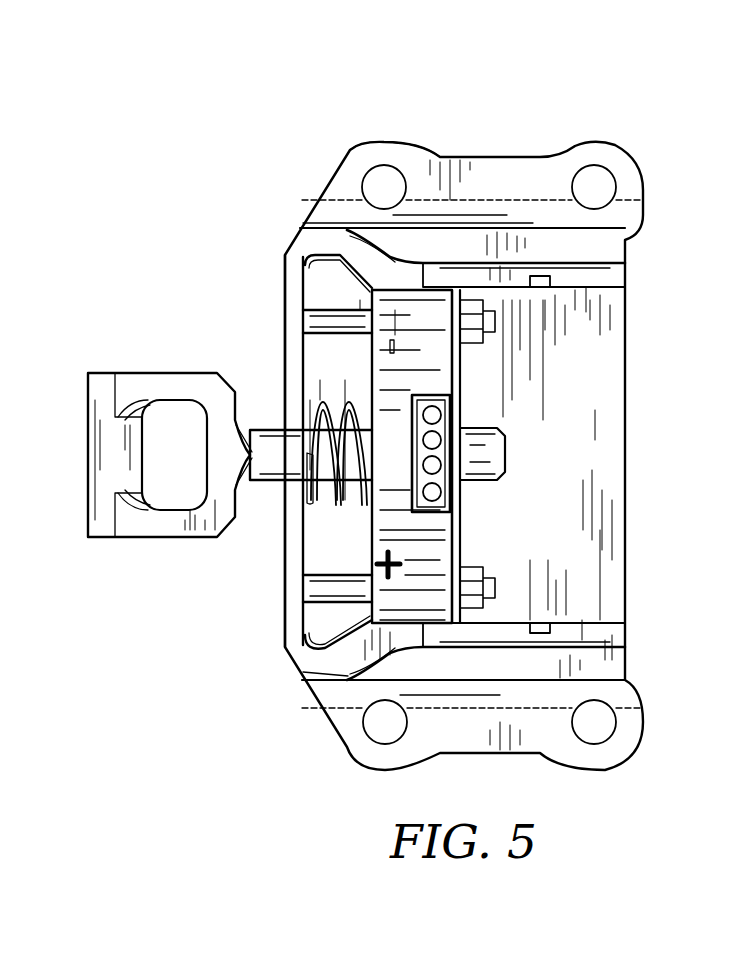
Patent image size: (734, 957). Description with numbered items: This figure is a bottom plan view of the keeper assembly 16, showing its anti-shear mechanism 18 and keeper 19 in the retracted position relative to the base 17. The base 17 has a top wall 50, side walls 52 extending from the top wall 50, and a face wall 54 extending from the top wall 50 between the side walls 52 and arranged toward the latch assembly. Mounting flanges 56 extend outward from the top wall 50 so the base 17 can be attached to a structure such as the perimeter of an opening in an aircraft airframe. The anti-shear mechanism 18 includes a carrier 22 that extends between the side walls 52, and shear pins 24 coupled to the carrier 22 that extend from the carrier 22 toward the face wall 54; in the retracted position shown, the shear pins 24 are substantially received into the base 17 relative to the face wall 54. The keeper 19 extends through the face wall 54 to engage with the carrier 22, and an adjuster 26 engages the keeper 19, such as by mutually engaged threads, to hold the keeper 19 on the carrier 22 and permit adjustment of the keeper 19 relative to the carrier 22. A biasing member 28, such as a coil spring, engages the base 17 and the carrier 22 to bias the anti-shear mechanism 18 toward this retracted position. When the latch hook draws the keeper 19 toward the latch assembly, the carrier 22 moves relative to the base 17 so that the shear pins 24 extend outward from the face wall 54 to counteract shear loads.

The keeper assembly 16 is at (182, 150).
The base 17 is at (504, 153).
The anti-shear mechanism 18 is at (535, 462).
The keeper 19 is at (143, 368).
The carrier 22 is at (432, 543).
The shear pins 24 is at (321, 340).
The adjuster 26 is at (442, 428).
The biasing member 28 is at (337, 522).
The top wall 50 is at (598, 349).
The side walls 52 is at (609, 274).
The face wall 54 is at (290, 324).
The mounting flanges 56 is at (370, 135).